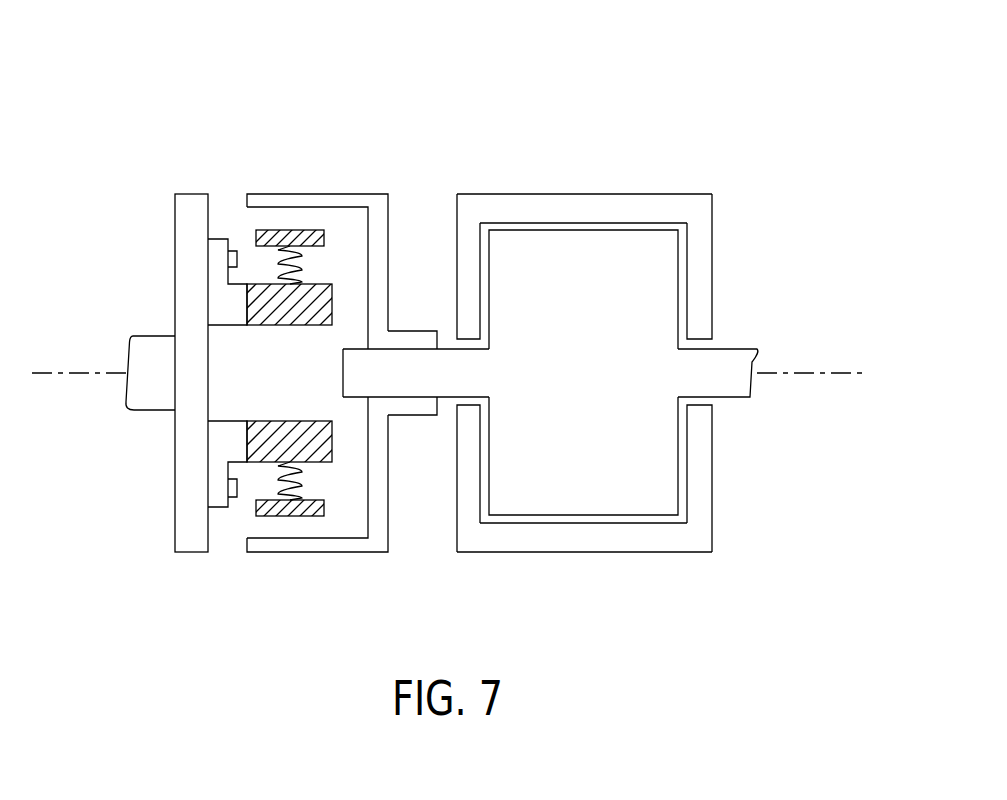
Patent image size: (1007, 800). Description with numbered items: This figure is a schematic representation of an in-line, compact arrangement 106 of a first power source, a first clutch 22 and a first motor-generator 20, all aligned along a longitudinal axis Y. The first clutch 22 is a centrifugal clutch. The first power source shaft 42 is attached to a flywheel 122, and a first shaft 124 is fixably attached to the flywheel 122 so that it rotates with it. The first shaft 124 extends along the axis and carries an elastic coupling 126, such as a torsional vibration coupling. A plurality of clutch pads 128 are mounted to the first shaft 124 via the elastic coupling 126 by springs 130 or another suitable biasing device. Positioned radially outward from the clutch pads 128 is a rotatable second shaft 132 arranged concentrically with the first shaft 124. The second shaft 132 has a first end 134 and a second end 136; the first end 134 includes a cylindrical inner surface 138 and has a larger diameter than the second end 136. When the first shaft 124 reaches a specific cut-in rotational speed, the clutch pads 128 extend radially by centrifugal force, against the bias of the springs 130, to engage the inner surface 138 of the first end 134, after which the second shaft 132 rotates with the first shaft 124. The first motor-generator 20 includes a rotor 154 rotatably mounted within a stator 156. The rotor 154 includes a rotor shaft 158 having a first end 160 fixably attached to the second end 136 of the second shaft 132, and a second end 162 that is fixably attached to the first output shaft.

The first motor-generator 20 is at (584, 297).
The first clutch 22 is at (298, 137).
The first power source shaft 42 is at (150, 360).
The arrangement 106 is at (693, 97).
The flywheel 122 is at (193, 200).
The first shaft 124 is at (222, 305).
The elastic coupling 126 is at (285, 308).
The clutch pads 128 is at (288, 228).
The springs 130 is at (301, 265).
The second shaft 132 is at (327, 368).
The first end 134 is at (247, 180).
The second end 136 is at (405, 452).
The inner surface 138 is at (286, 538).
The rotor 154 is at (553, 490).
The stator 156 is at (585, 197).
The rotor shaft 158 is at (556, 373).
The first end 160 is at (402, 367).
The second end 162 is at (738, 357).
The longitudinal axis Y is at (817, 370).